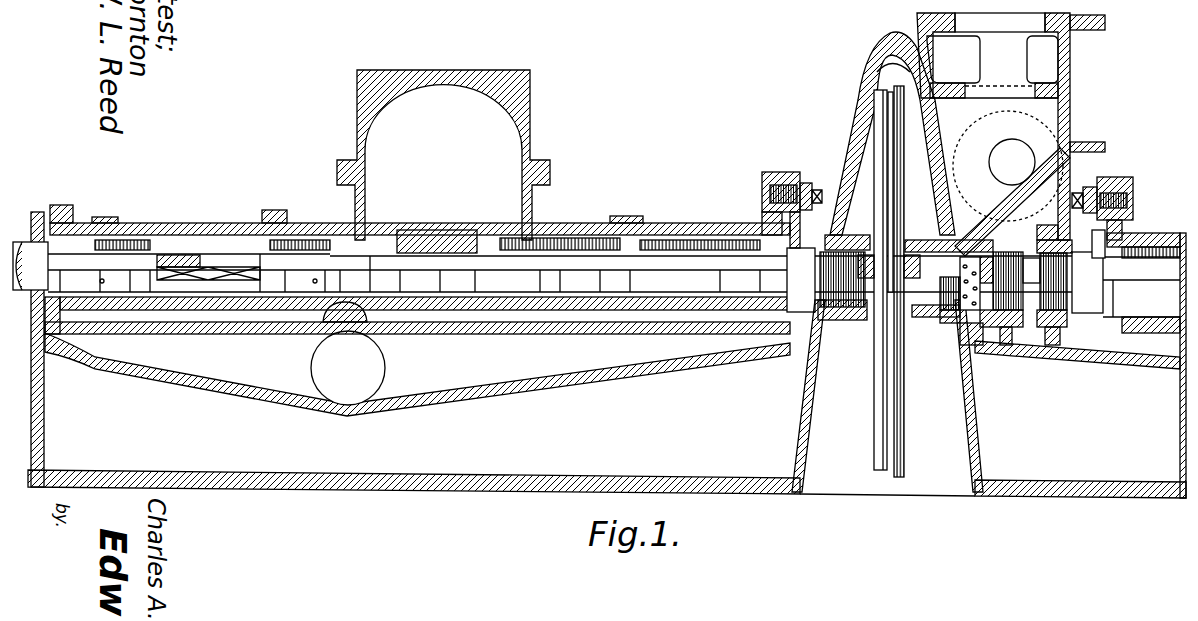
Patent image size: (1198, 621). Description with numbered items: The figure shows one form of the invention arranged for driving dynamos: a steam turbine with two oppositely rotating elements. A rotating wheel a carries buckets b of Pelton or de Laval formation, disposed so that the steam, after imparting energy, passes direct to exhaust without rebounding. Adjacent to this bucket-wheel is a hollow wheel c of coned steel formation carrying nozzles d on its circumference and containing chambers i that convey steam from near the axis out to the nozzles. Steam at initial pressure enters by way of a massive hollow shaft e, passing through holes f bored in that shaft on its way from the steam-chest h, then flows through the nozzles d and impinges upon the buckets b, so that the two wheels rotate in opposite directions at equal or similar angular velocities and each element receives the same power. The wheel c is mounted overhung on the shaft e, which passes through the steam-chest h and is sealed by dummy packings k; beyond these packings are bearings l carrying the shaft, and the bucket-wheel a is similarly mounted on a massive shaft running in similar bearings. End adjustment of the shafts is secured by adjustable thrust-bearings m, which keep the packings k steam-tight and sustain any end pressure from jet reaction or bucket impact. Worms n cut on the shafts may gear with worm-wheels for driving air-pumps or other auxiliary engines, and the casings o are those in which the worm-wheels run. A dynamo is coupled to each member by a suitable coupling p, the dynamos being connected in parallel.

The rotating wheel a is at (878, 202).
The buckets b is at (893, 76).
The hollow wheel c is at (905, 188).
The nozzles d is at (992, 59).
The hollow shaft e is at (930, 244).
The holes f is at (968, 258).
The steam-chest h is at (988, 152).
The chambers i is at (893, 208).
The dummy packings k is at (850, 320).
The bearings l is at (302, 242).
The adjustable thrust-bearings m is at (566, 244).
The worms n is at (438, 242).
The dome o is at (534, 143).
The coupling p is at (210, 262).